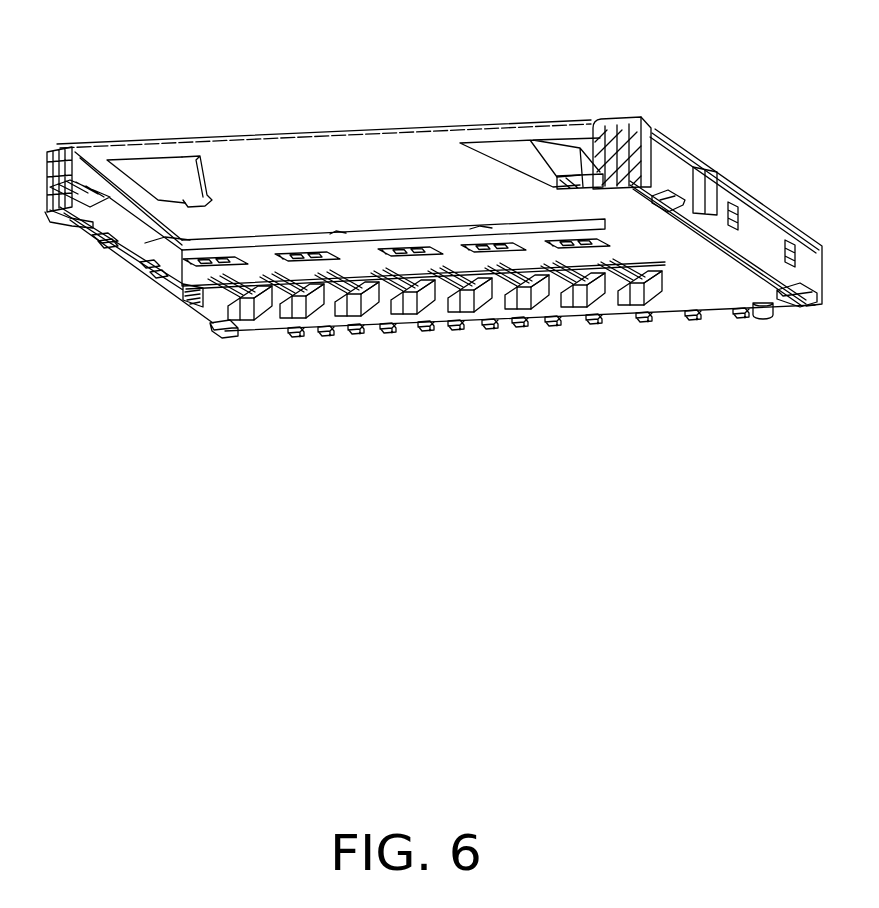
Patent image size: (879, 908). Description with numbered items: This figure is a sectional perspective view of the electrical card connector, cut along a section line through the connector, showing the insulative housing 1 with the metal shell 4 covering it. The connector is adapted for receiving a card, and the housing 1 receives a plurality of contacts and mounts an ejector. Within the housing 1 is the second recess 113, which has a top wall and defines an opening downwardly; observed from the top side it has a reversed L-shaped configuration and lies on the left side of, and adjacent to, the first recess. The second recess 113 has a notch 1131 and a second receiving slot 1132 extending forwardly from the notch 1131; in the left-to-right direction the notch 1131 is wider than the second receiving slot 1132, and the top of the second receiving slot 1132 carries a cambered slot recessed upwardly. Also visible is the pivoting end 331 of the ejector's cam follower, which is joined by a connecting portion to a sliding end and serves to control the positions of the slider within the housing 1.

The insulative housing 1 is at (46, 163).
The metal shell 4 is at (280, 136).
The pivoting end 331 is at (604, 146).
The second recess 113 is at (645, 182).
The notch 1131 is at (663, 177).
The second receiving slot 1132 is at (610, 230).